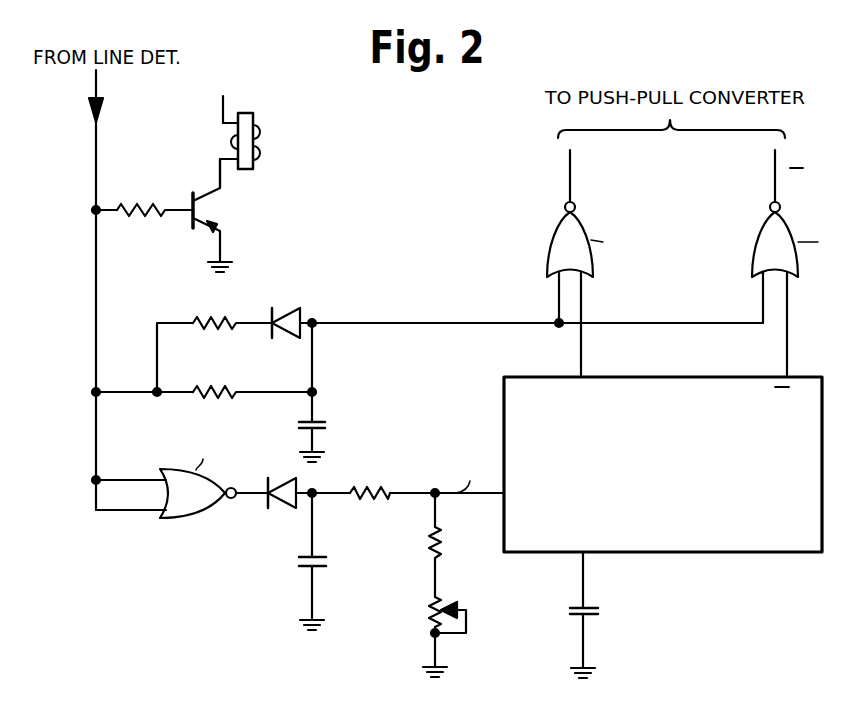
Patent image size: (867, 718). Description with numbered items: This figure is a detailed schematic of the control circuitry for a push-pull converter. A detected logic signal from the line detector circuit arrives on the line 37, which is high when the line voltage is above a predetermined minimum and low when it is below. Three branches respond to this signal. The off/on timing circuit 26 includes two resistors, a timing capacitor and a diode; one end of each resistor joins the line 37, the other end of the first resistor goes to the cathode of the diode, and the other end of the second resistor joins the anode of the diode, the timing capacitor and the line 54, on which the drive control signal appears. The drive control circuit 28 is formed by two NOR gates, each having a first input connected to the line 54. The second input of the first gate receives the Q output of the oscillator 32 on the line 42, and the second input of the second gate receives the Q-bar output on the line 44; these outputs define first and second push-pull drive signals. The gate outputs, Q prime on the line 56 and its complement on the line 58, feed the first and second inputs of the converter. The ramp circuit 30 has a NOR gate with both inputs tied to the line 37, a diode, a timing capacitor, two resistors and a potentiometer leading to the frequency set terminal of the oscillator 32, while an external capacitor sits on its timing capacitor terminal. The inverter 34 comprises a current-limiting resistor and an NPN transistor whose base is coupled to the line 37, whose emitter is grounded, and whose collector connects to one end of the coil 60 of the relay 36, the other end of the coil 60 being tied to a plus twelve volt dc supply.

The line 37 is at (96, 135).
The relay 36 is at (240, 114).
The coil 60 is at (256, 155).
The inverter 34 is at (159, 262).
The off/on timing circuit 26 is at (247, 377).
The line 54 is at (462, 321).
The line 56 is at (570, 166).
The line 58 is at (775, 157).
The drive control circuit 28 is at (669, 235).
The line 42 is at (581, 344).
The line 44 is at (787, 330).
The ramp circuit 30 is at (202, 577).
The oscillator 32 is at (718, 554).